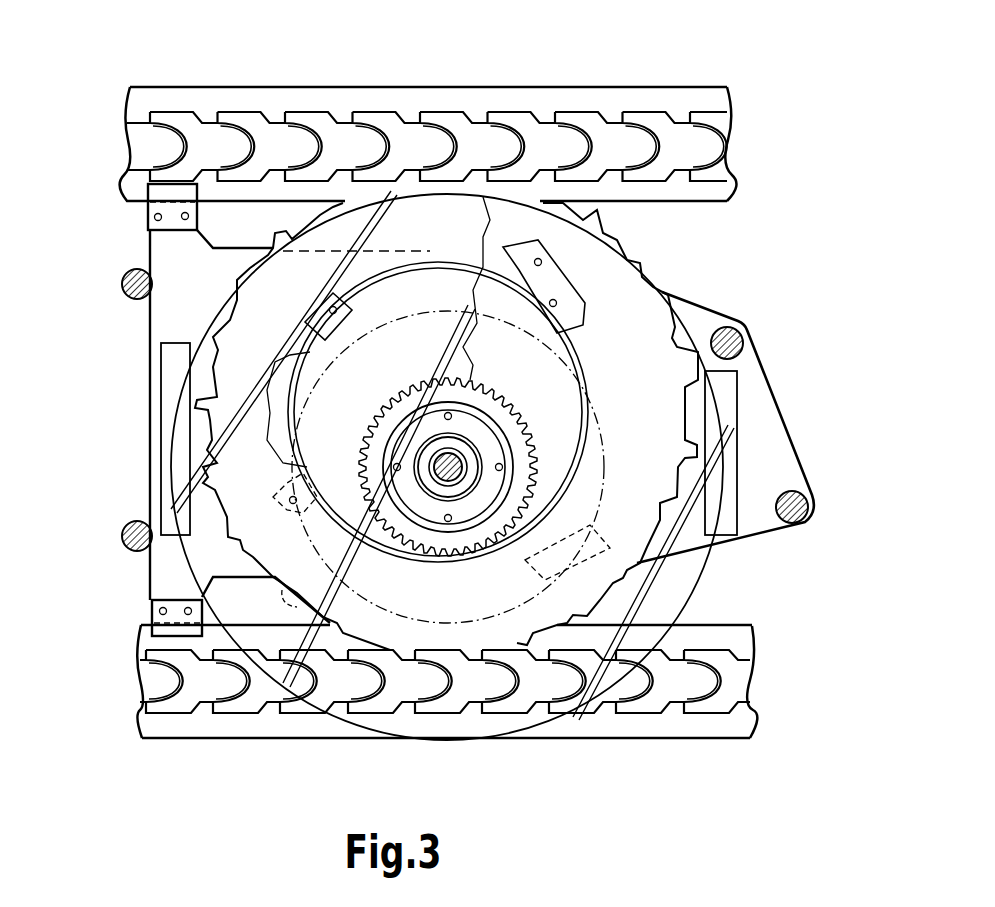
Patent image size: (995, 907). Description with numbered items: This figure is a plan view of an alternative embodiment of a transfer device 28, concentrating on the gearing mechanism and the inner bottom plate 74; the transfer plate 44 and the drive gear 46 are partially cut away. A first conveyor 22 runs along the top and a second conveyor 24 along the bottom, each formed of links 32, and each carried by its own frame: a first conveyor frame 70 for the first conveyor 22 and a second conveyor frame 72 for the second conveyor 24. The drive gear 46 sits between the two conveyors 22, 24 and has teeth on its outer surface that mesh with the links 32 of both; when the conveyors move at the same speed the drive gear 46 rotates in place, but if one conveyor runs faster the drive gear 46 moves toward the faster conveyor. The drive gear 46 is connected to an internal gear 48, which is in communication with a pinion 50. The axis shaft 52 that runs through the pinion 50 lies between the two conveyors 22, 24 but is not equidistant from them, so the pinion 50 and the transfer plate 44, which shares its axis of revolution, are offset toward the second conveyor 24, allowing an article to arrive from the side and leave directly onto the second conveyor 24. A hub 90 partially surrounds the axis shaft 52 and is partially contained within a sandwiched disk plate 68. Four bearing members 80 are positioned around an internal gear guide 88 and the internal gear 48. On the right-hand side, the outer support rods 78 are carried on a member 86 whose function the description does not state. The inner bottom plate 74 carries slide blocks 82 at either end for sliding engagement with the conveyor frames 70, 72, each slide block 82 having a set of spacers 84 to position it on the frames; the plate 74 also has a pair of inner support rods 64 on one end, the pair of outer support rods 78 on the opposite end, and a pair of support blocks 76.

The first conveyor 22 is at (274, 140).
The second conveyor 24 is at (670, 688).
The transfer device 28 is at (660, 70).
The links 32 is at (424, 140).
The transfer plate 44 is at (698, 557).
The drive gear 46 is at (667, 292).
The internal gear 48 is at (383, 548).
The pinion 50 is at (445, 552).
The axis shaft 52 is at (462, 467).
The inner support rods 64 is at (121, 284).
The sandwiched disk plate 68 is at (473, 508).
The first conveyor frame 70 is at (173, 96).
The second conveyor frame 72 is at (158, 725).
The inner bottom plate 74 is at (163, 327).
The support blocks 76 is at (162, 426).
The outer support rods 78 is at (747, 338).
The bearing members 80 is at (262, 262).
The slide blocks 82 is at (148, 190).
The spacers 84 is at (157, 216).
The adjustment arm 86 is at (793, 460).
The internal gear guide 88 is at (293, 593).
The hub 90 is at (423, 448).